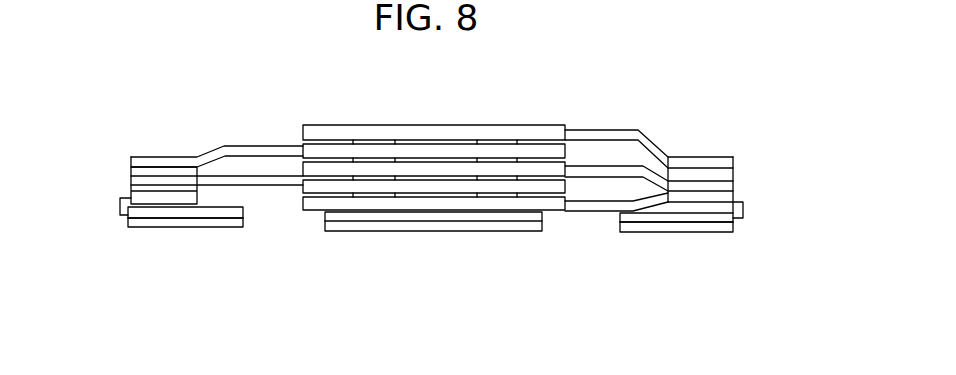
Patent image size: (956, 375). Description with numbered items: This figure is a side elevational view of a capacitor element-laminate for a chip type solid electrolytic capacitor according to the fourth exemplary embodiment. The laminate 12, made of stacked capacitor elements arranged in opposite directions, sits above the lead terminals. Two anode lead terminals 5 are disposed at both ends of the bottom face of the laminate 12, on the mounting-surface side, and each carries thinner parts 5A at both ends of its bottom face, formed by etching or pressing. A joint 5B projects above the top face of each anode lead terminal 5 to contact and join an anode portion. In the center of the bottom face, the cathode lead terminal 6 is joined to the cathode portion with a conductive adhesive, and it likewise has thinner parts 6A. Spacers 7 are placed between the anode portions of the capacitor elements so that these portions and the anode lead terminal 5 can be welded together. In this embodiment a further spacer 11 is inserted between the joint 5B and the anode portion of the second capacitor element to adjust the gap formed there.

The anode lead terminal 5 is at (150, 221).
The thinner part 5A is at (198, 212).
The joint 5B is at (130, 205).
The cathode lead terminal 6 is at (400, 228).
The thinner part 6A is at (472, 222).
The spacer 7 is at (143, 175).
The spacer 11 is at (140, 192).
The capacitor element-laminate 12 is at (225, 105).